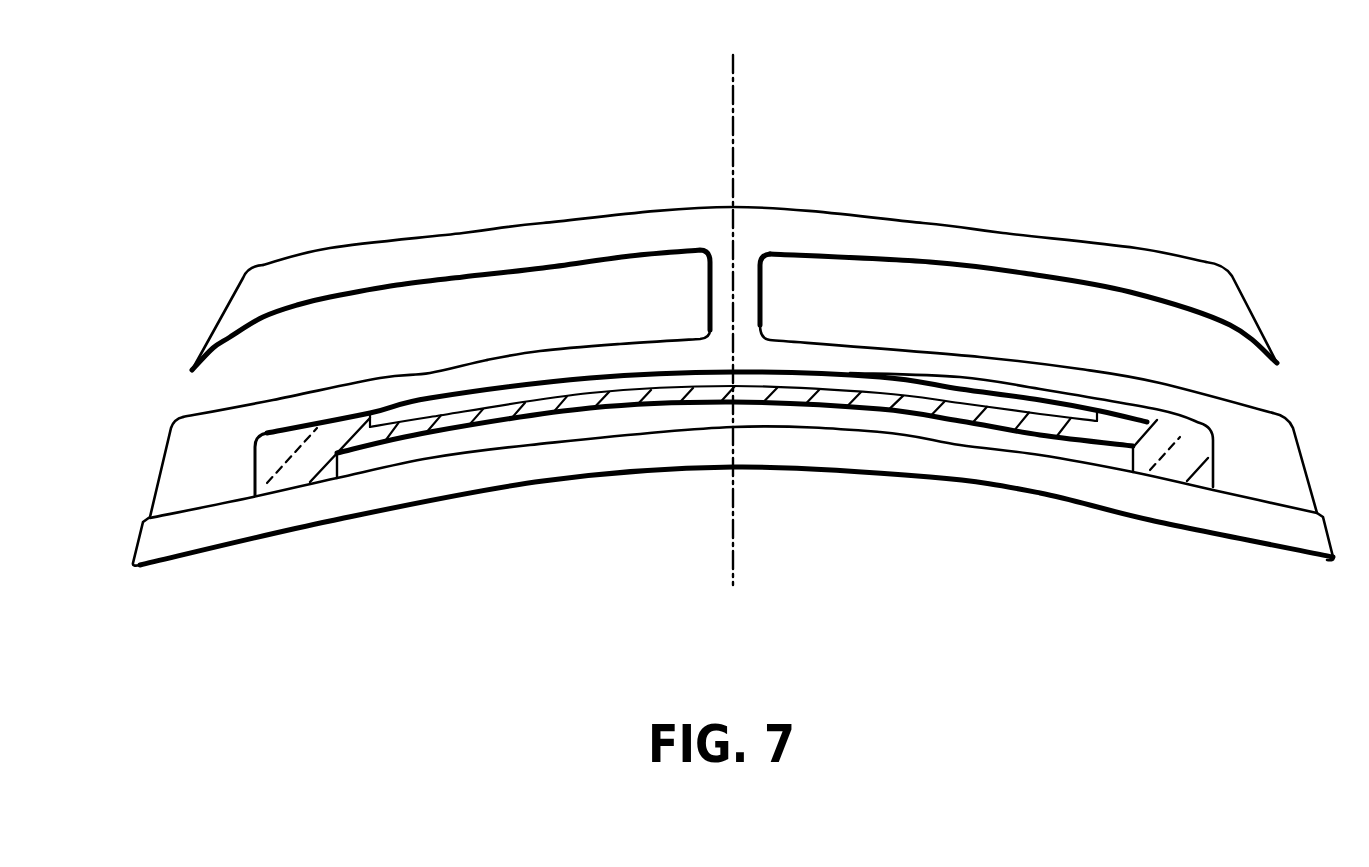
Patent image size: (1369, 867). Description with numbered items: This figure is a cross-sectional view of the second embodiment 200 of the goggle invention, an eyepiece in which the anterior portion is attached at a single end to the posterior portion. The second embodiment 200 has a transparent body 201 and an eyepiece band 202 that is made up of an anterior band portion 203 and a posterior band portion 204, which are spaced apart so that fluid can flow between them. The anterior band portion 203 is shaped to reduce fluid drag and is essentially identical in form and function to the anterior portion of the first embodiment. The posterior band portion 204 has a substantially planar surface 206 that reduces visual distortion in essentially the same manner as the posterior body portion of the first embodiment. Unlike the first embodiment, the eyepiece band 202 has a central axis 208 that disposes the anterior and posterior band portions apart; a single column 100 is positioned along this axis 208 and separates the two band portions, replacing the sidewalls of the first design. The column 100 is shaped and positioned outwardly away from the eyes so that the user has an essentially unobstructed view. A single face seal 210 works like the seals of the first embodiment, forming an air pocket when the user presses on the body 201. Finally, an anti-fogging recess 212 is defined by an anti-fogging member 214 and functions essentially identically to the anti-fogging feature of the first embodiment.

The column 100 is at (743, 280).
The second embodiment 200 is at (1073, 182).
The transparent body 201 is at (927, 222).
The eyepiece band 202 is at (1157, 238).
The anterior band portion 203 is at (570, 230).
The posterior band portion 204 is at (403, 386).
The substantially planar surface 206 is at (487, 358).
The central axis 208 is at (731, 75).
The face seal 210 is at (233, 523).
The anti-fogging recess 212 is at (855, 387).
The anti-fogging member 214 is at (582, 403).